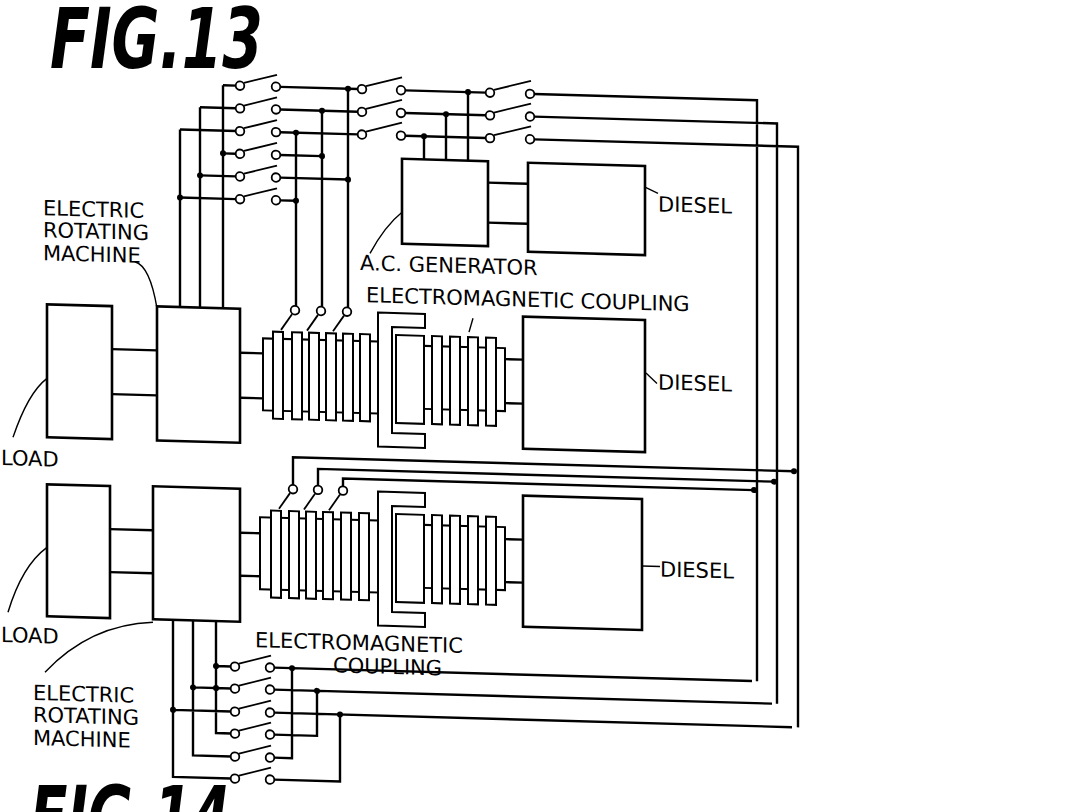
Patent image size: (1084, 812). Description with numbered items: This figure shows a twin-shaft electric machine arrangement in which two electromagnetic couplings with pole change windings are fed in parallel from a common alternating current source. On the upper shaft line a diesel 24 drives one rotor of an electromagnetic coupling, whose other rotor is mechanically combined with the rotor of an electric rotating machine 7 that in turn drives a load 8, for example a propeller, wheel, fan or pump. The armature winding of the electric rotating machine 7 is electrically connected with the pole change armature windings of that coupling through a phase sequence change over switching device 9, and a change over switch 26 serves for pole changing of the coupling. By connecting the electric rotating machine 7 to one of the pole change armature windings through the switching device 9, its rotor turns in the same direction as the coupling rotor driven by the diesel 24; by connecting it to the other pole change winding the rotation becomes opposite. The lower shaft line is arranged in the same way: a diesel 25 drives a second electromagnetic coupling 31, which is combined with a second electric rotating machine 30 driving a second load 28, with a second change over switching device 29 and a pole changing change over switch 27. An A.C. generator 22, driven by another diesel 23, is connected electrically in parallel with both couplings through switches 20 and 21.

The electric rotating machine 7 is at (198, 374).
The load 8 is at (79, 371).
The phase sequence change over switching device 9 is at (258, 154).
The switch 20 is at (382, 121).
The switch 21 is at (510, 123).
The alternating current generator 22 is at (445, 202).
The diesel 23 is at (586, 209).
The diesel 24 is at (584, 384).
The diesel 25 is at (582, 563).
The change over switch 26 is at (305, 309).
The change over switch 27 is at (301, 487).
The load 28 is at (78, 551).
The phase sequence change over switching device 29 is at (262, 733).
The electric rotating machine 30 is at (196, 553).
The electromagnetic coupling 31 is at (382, 558).